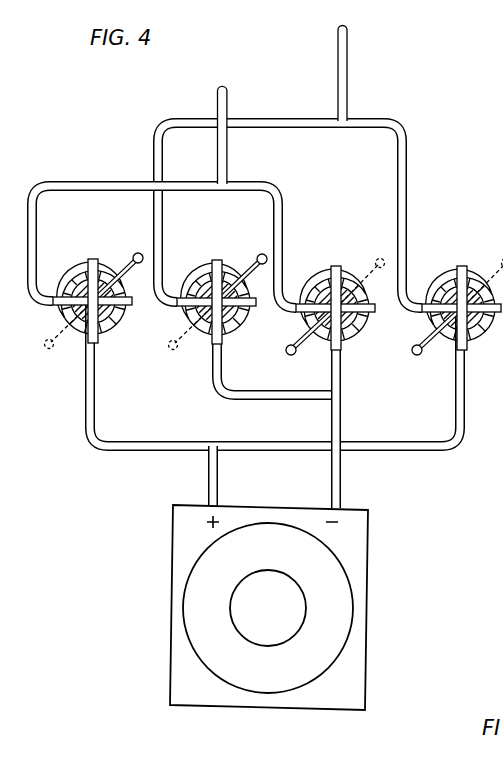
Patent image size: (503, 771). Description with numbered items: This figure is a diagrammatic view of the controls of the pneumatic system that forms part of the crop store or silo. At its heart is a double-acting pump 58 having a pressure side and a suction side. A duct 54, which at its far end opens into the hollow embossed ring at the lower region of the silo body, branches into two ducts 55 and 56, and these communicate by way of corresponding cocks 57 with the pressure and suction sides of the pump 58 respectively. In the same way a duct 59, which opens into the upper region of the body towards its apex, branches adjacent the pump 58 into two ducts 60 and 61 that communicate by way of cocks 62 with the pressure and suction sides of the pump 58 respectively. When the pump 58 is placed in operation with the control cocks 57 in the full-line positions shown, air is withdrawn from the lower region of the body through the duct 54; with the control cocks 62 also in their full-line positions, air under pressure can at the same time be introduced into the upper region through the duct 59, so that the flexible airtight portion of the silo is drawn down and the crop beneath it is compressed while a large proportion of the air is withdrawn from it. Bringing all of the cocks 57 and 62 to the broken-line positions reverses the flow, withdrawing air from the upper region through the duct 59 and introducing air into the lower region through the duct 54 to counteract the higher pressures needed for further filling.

The duct 54 is at (228, 98).
The duct 55 is at (122, 158).
The duct 56 is at (283, 212).
The cock 57 is at (90, 272).
The double-acting pump 58 is at (181, 541).
The duct 59 is at (343, 58).
The duct 60 is at (405, 168).
The duct 61 is at (315, 101).
The cock 62 is at (205, 280).